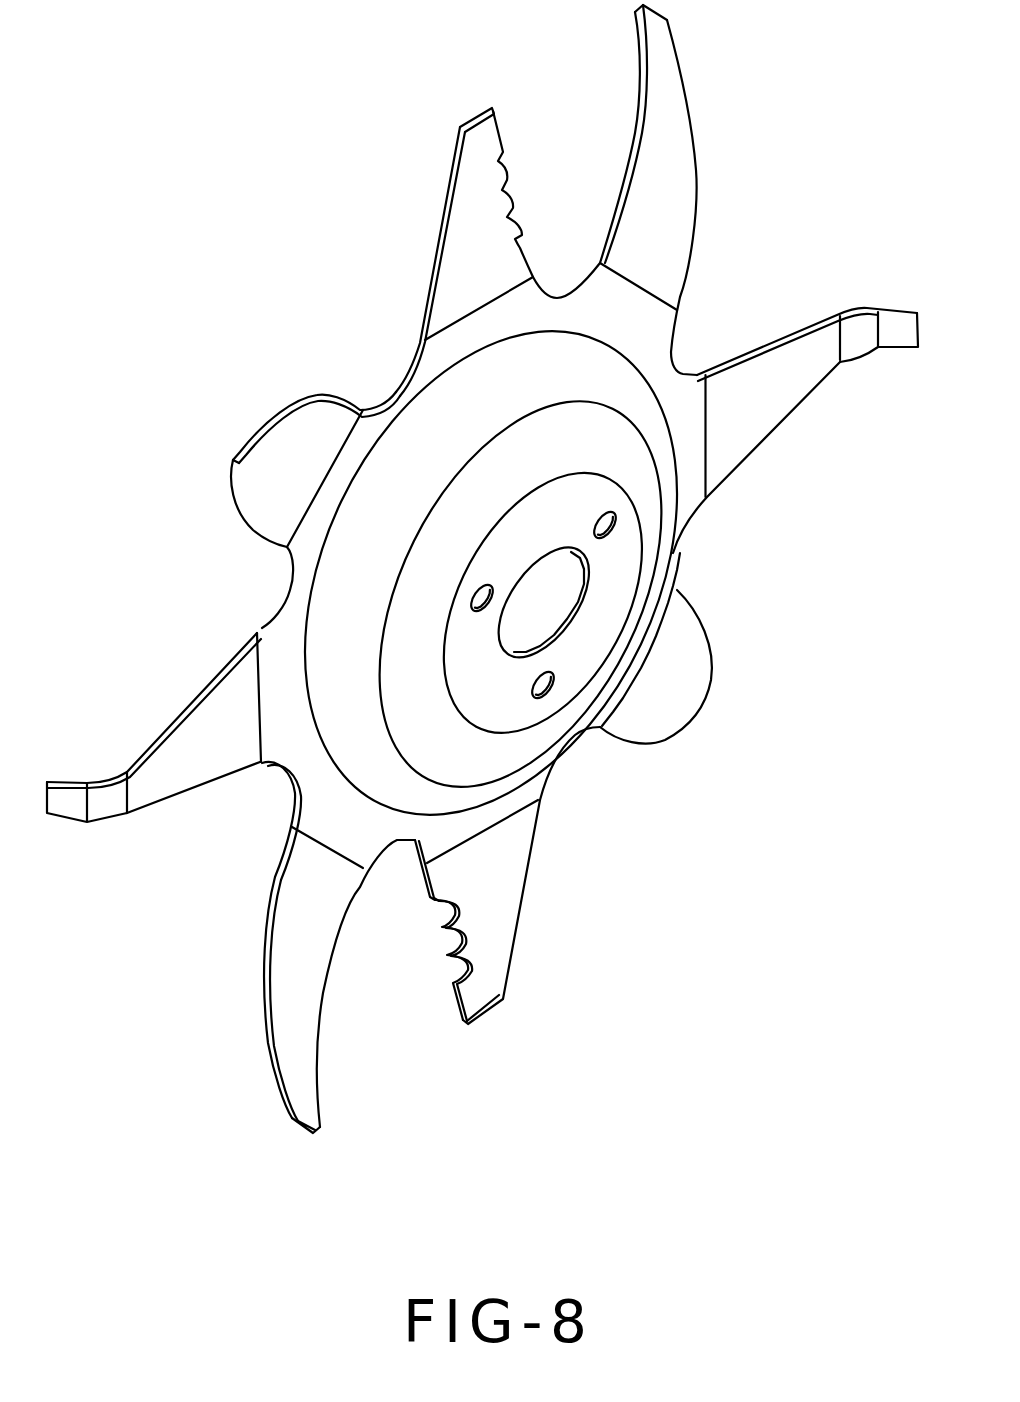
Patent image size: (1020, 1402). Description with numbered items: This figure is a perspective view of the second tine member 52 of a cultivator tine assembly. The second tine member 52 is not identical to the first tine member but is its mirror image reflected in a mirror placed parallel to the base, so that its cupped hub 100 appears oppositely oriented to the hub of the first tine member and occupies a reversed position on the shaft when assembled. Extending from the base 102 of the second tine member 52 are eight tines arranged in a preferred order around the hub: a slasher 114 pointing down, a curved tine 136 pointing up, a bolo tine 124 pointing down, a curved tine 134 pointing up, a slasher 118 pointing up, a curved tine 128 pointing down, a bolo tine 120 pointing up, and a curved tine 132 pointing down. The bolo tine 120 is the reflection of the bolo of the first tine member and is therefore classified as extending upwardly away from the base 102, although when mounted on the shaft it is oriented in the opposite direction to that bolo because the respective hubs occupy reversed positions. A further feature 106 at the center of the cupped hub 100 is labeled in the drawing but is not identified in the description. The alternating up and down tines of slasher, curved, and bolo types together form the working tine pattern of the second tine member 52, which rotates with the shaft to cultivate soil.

The second tine member 52 is at (200, 982).
The cupped hub 100 is at (658, 530).
The base 102 is at (630, 568).
The central hub opening 106 is at (540, 615).
The slasher 114 is at (483, 198).
The slasher 118 is at (495, 915).
The bolo tine 120 is at (173, 740).
The bolo tine 124 is at (767, 397).
The curved tine 128 is at (295, 1010).
The curved tine 132 is at (263, 490).
The curved tine 134 is at (688, 712).
The curved tine 136 is at (667, 173).